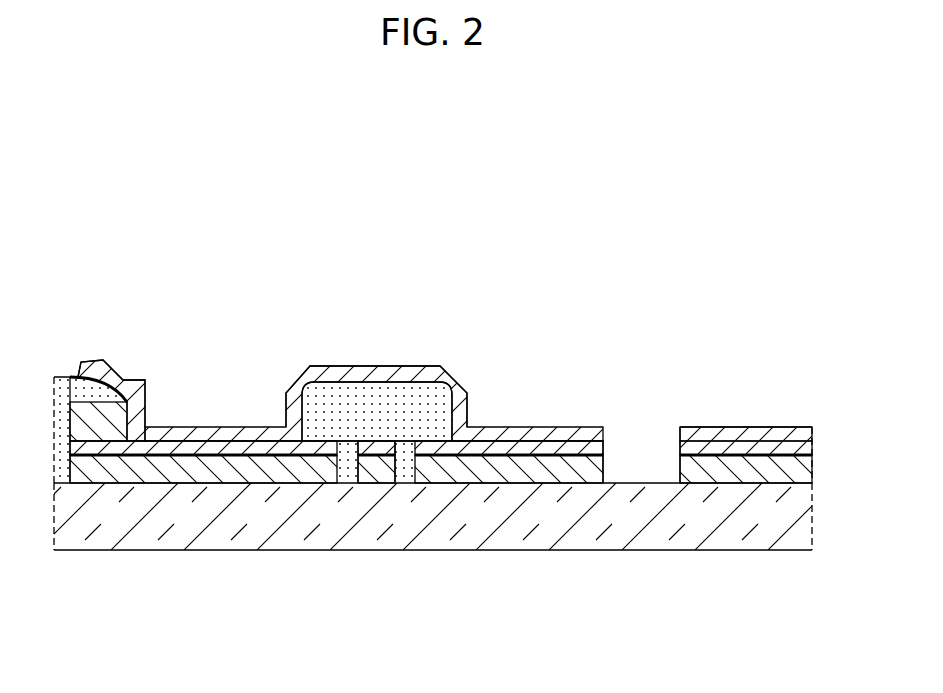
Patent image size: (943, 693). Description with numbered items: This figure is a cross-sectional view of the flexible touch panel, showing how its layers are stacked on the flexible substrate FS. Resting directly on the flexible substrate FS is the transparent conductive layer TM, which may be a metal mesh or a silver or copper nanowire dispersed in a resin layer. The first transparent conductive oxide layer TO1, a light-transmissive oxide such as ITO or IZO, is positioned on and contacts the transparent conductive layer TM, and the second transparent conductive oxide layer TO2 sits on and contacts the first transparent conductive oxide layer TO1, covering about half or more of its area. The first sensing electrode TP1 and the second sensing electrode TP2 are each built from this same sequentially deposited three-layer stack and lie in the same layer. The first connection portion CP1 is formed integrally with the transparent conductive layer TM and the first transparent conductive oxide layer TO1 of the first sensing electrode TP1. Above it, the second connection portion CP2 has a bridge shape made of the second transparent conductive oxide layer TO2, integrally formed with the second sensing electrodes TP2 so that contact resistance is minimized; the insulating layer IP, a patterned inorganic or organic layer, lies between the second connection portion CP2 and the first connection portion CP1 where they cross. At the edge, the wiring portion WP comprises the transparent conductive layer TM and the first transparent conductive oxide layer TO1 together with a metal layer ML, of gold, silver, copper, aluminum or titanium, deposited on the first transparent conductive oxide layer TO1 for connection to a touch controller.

The flexible substrate FS is at (543, 535).
The insulating layer IP is at (435, 398).
The transparent conductive layer TM is at (85, 468).
The first transparent conductive oxide layer TO1 is at (100, 450).
The second transparent conductive oxide layer TO2 is at (393, 372).
The metal layer ML is at (118, 412).
The wiring portion WP is at (187, 275).
The first connection portion CP1 is at (380, 282).
The second connection portion CP2 is at (430, 366).
The first sensing electrode TP1 is at (828, 342).
The second sensing electrode TP2 is at (548, 428).